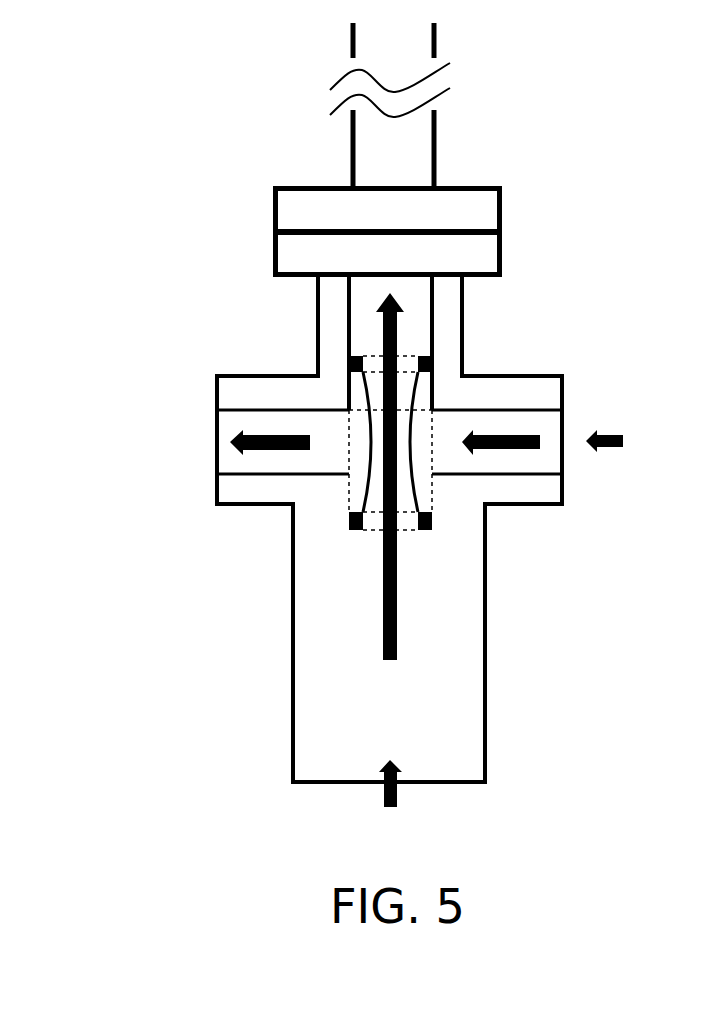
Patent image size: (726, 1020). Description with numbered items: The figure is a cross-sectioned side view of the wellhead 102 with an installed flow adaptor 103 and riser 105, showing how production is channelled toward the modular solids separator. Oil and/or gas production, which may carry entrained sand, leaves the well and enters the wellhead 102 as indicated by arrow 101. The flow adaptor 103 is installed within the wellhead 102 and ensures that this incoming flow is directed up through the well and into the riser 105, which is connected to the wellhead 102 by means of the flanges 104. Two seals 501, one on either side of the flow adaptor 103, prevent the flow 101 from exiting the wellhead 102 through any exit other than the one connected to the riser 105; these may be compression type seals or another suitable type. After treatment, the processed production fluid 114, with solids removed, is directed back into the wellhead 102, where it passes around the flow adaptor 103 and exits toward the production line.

The production flow 101 is at (392, 800).
The wellhead 102 is at (502, 620).
The flow adaptor 103 is at (365, 432).
The flanges 104 is at (519, 231).
The riser 105 is at (455, 40).
The processed production fluid 114 is at (638, 439).
The seals 501 is at (343, 362).